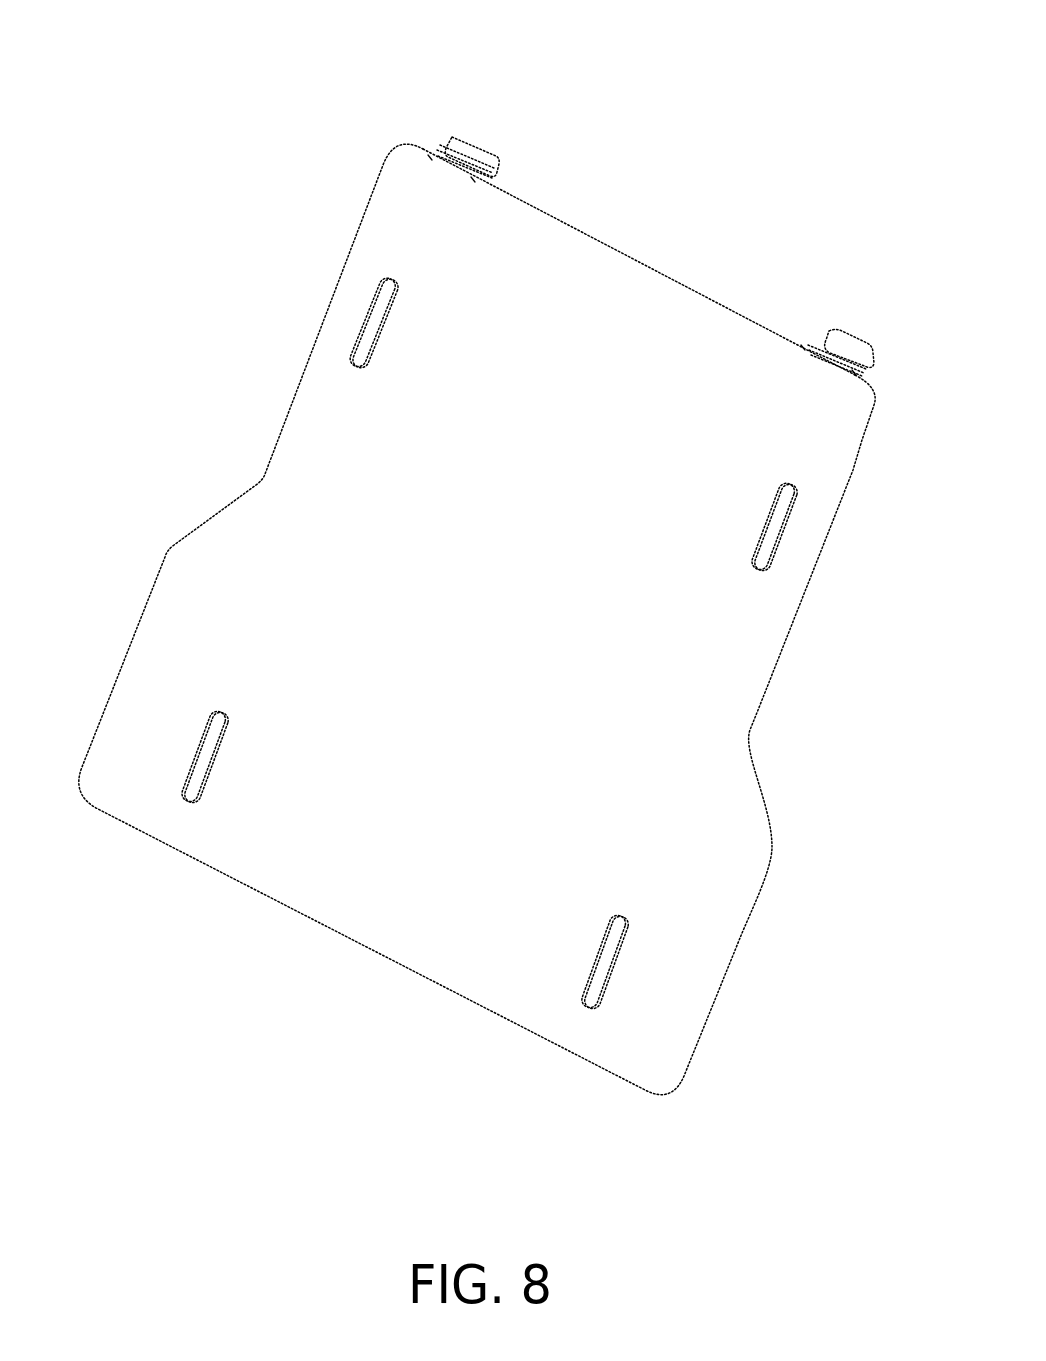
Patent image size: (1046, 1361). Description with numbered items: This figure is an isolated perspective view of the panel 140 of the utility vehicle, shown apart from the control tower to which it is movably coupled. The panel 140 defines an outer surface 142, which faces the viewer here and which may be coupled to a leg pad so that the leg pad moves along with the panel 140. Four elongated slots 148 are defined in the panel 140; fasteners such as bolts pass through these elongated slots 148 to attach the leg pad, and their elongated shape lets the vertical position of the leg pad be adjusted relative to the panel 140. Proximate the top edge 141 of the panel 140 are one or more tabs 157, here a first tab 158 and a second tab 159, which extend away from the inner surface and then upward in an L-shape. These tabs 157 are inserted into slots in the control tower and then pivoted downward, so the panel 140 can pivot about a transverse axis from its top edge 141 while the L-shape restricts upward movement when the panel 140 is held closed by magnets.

The panel 140 is at (553, 310).
The top edge 141 is at (667, 272).
The outer surface 142 is at (385, 872).
The elongated slots 148 is at (367, 327).
The tabs 157 is at (478, 104).
The first tab 158 is at (460, 163).
The second tab 159 is at (857, 347).